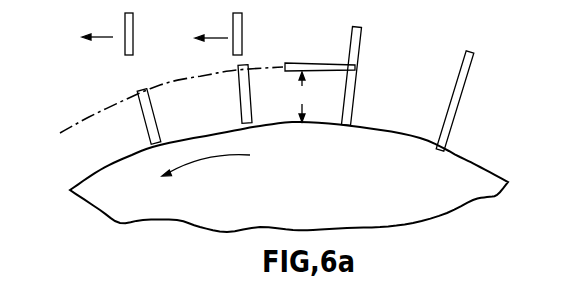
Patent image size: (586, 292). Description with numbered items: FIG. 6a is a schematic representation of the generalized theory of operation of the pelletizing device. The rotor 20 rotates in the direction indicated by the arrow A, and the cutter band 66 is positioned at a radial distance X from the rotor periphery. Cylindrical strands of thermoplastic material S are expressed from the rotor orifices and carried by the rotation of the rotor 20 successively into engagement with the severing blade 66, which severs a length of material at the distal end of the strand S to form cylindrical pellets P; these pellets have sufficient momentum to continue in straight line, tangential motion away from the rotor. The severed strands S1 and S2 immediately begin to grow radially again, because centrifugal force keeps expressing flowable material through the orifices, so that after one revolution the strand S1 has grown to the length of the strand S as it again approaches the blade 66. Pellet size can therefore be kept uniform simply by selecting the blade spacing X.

The rotor 20 is at (305, 207).
The cylindrical pellets P is at (233, 27).
The strand of thermoplastic material S is at (462, 68).
The severed strand S1 is at (240, 100).
The severed strand S2 is at (146, 128).
The cutter band 66 is at (312, 63).
The radial distance X is at (302, 97).
The arrow A is at (212, 165).